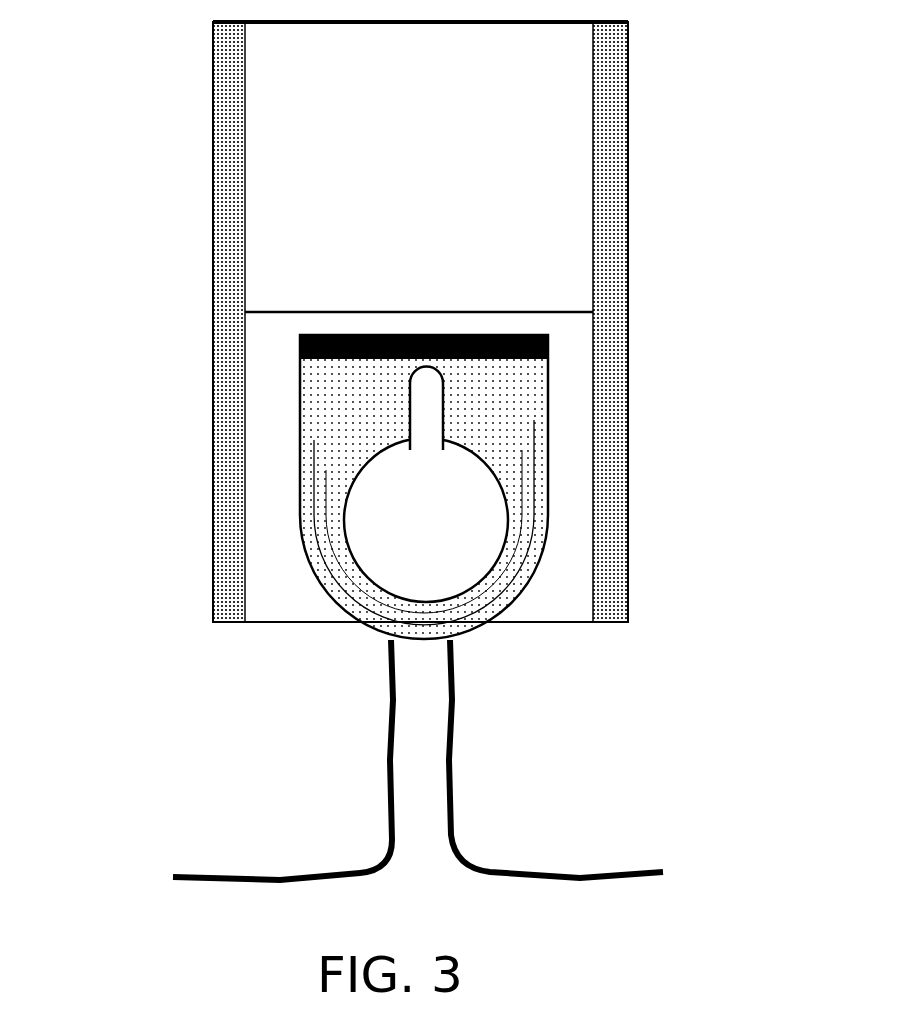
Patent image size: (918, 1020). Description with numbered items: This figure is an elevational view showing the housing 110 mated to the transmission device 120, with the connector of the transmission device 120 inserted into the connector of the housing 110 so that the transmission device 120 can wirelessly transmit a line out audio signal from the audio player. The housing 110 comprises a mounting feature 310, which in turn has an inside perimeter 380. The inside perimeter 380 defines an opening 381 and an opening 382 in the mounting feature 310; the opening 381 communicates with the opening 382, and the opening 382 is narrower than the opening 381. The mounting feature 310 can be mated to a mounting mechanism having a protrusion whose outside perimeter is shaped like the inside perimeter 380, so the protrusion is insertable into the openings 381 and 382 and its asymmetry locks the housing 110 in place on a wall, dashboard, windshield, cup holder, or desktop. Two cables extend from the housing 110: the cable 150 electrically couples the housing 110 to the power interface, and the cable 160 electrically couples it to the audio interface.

The housing 110 is at (270, 572).
The transmission device 120 is at (570, 115).
The mounting feature 310 is at (530, 392).
The inside perimeter 380 is at (508, 556).
The opening 381 is at (368, 513).
The opening 382 is at (425, 400).
The cable 150 is at (383, 795).
The cable 160 is at (452, 748).